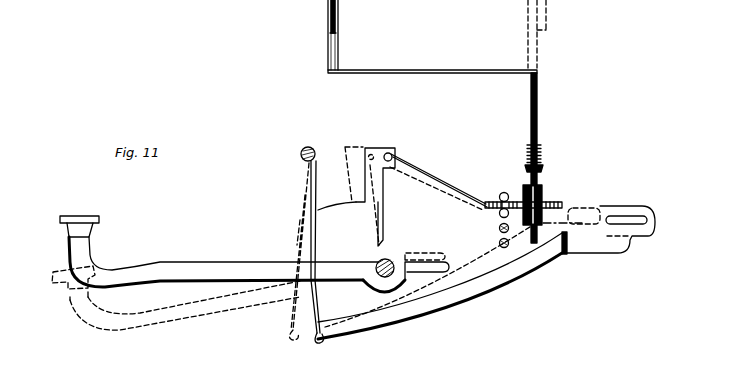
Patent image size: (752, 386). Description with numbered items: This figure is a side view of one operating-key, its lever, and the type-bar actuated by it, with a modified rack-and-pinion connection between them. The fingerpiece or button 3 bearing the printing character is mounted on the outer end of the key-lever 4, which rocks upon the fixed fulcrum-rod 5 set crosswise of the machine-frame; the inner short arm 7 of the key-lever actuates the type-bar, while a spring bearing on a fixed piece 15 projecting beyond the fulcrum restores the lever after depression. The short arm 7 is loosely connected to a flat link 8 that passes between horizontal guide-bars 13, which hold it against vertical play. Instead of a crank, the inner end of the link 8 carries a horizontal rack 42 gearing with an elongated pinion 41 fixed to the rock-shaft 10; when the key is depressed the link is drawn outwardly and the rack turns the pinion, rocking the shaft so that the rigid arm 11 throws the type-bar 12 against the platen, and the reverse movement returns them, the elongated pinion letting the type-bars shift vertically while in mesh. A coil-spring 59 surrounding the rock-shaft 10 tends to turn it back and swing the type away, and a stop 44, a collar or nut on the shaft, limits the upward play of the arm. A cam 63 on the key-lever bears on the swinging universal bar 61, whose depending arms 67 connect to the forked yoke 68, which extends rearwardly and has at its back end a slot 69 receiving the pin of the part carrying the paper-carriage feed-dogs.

The fingerpiece or button 3 is at (76, 216).
The key-lever 4 is at (233, 262).
The fulcrum-rod 5 is at (389, 258).
The short arm of the key-lever 7 is at (345, 148).
The link 8 is at (440, 180).
The rock-shaft 10 is at (538, 107).
The rigid arm 11 is at (432, 62).
The type-bar 12 is at (340, 15).
The horizontal guide-bars 13 is at (502, 194).
The fixed piece 15 is at (445, 266).
The elongated pinion 41 is at (543, 190).
The horizontal rack 42 is at (561, 207).
The stop 44 is at (543, 169).
The coil-spring 59 is at (541, 150).
The universal bar 61 is at (307, 218).
The cam 63 is at (331, 206).
The depending arm 67 is at (309, 147).
The forked frame or yoke 68 is at (430, 313).
The slot 69 is at (645, 212).